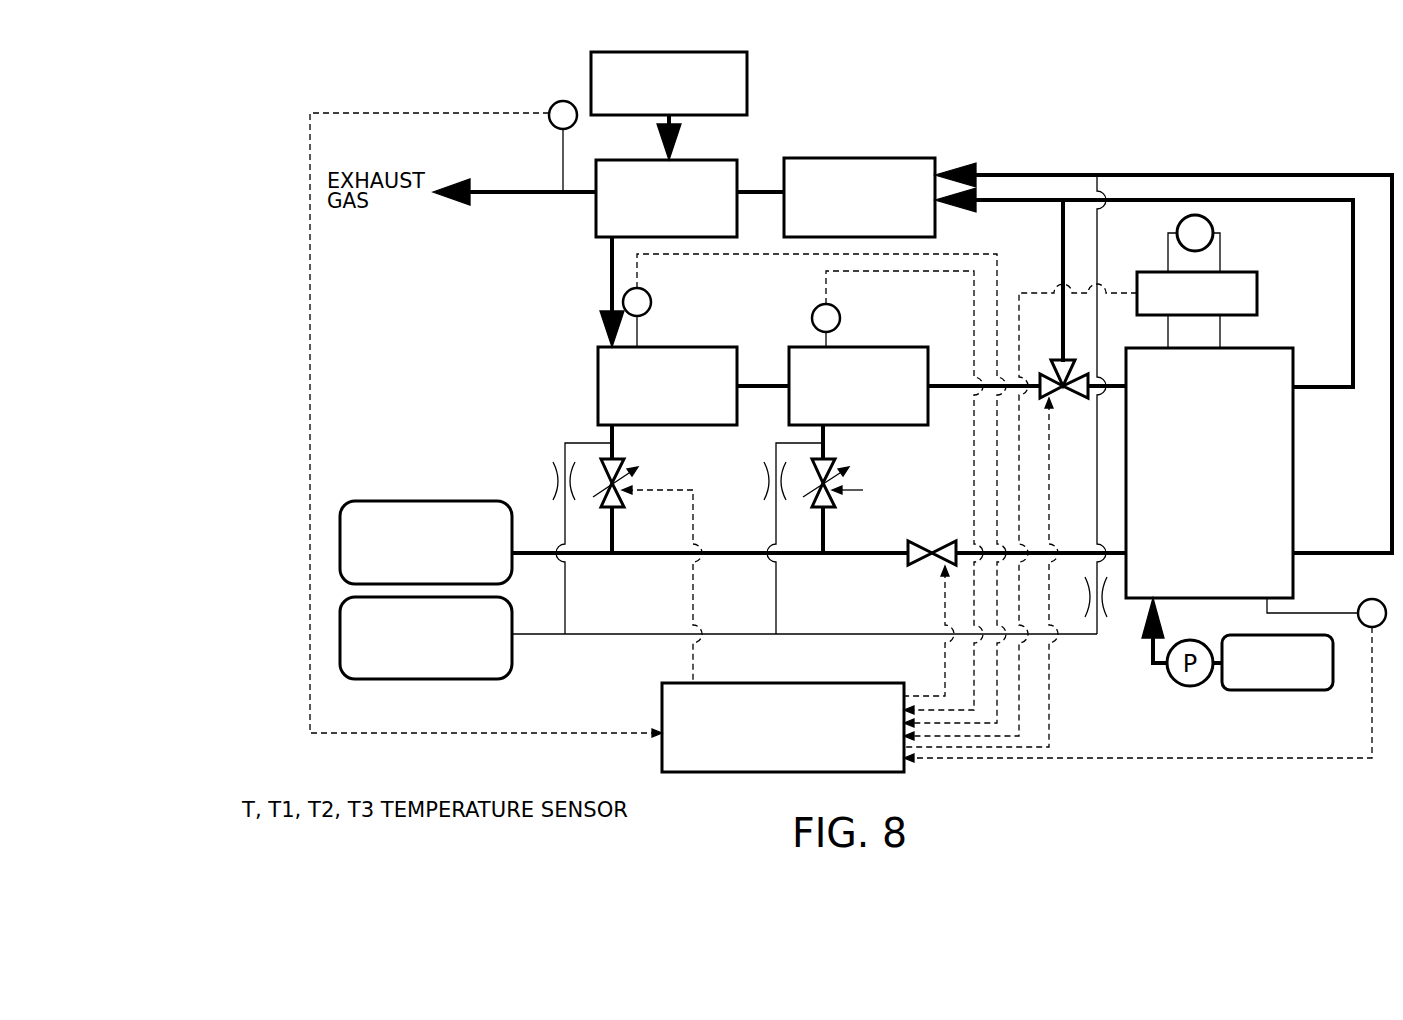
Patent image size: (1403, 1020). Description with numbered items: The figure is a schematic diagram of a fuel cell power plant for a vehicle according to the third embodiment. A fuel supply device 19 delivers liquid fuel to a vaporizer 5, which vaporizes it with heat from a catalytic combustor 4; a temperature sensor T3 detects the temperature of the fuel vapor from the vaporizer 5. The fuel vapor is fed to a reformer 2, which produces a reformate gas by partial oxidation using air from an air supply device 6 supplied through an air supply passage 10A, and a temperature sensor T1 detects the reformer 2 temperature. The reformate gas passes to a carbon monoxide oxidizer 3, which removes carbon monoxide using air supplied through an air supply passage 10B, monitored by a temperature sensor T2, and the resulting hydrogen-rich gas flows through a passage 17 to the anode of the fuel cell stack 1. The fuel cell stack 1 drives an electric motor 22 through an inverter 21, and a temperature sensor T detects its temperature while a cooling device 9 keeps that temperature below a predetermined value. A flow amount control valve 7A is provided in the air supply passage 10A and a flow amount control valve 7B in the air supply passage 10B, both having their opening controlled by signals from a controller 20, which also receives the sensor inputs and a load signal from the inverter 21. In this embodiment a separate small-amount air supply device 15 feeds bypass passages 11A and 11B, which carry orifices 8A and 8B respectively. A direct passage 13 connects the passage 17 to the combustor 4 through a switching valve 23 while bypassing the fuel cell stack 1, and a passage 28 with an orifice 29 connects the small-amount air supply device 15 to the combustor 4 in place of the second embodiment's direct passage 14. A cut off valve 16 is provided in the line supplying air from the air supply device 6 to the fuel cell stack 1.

The fuel cell stack 1 is at (1275, 348).
The reformer 2 is at (722, 347).
The carbon monoxide oxidizer 3 is at (907, 347).
The catalytic combustor 4 is at (912, 158).
The vaporizer 5 is at (737, 168).
The air supply device 6 is at (468, 501).
The flow amount control valve 7A is at (625, 498).
The flow amount control valve 7B is at (836, 498).
The orifice 8A is at (553, 492).
The orifice 8B is at (765, 490).
The cooling device 9 is at (1333, 650).
The air supply passage 10A is at (614, 428).
The air supply passage 10B is at (825, 428).
The bypass passage 11A is at (565, 443).
The bypass passage 11B is at (776, 456).
The direct passage 13 is at (1063, 238).
The direct passage 14 is at (1097, 240).
The small-amount air supply device 15 is at (512, 667).
The cut off valve 16 is at (932, 541).
The passage 17 is at (952, 386).
The fuel supply device 19 is at (747, 80).
The controller 20 is at (700, 772).
The inverter 21 is at (1252, 272).
The electric motor 22 is at (1213, 228).
The switching valve 23 is at (1065, 400).
The passage 28 is at (1097, 530).
The orifice 29 is at (1107, 614).
The temperature sensor T is at (1381, 600).
The temperature sensor T1 is at (648, 292).
The temperature sensor T2 is at (838, 309).
The temperature sensor T3 is at (549, 110).